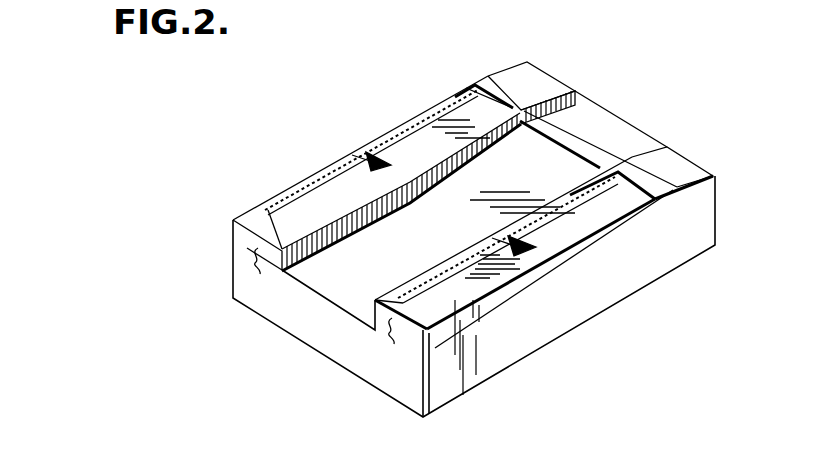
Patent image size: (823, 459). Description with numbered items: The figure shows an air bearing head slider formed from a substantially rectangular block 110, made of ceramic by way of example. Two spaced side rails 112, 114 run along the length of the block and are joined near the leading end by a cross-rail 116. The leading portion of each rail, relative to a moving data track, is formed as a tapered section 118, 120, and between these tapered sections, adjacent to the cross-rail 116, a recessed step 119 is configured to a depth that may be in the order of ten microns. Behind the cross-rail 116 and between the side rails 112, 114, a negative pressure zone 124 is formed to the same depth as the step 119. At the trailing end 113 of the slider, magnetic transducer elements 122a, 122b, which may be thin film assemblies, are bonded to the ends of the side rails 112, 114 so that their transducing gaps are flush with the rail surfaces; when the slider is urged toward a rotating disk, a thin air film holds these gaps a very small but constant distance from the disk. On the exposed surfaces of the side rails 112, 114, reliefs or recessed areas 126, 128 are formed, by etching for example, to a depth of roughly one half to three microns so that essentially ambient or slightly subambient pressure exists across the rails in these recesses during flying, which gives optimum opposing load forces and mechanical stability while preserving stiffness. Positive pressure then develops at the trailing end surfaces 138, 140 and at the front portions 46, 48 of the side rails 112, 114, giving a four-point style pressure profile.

The rectangular block 110 is at (613, 346).
The side rail 112 is at (415, 111).
The trailing end 113 is at (336, 332).
The side rail 114 is at (562, 250).
The cross-rail 116 is at (553, 150).
The tapered section 118 is at (543, 80).
The recessed step 119 is at (597, 130).
The tapered section 120 is at (675, 160).
The magnetic transducer element 122a is at (252, 275).
The magnetic transducer element 122b is at (376, 344).
The negative pressure zone 124 is at (406, 252).
The recessed area 126 is at (352, 155).
The recessed area 128 is at (492, 238).
The trailing end surface 138 is at (257, 212).
The trailing end surface 140 is at (400, 300).
The front portion 46 is at (490, 85).
The front portion 48 is at (657, 183).